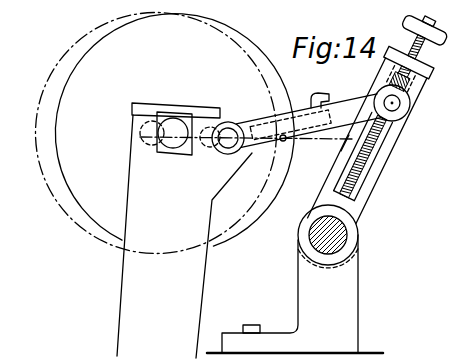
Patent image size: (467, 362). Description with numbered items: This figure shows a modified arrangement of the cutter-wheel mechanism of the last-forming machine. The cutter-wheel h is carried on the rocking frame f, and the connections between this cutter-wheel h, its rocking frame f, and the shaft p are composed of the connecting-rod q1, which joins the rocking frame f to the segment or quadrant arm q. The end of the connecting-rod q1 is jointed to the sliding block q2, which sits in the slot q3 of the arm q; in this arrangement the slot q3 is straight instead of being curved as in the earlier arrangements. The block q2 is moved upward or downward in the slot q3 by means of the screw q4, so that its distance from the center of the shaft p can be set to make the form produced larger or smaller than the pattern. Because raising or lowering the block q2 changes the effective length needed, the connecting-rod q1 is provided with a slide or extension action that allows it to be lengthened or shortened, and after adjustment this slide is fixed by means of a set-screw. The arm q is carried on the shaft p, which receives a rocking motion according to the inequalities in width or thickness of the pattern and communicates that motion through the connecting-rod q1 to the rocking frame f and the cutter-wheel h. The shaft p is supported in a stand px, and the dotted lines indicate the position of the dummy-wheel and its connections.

The cutter-wheel h is at (66, 92).
The rocking frame f is at (235, 230).
The connecting-rod q1 is at (330, 106).
The sliding block q2 is at (406, 100).
The segment or quadrant arm q is at (376, 183).
The segment-slot q3 is at (376, 137).
The screw q4 is at (341, 151).
The shaft p is at (336, 225).
The supporting stand px is at (295, 294).